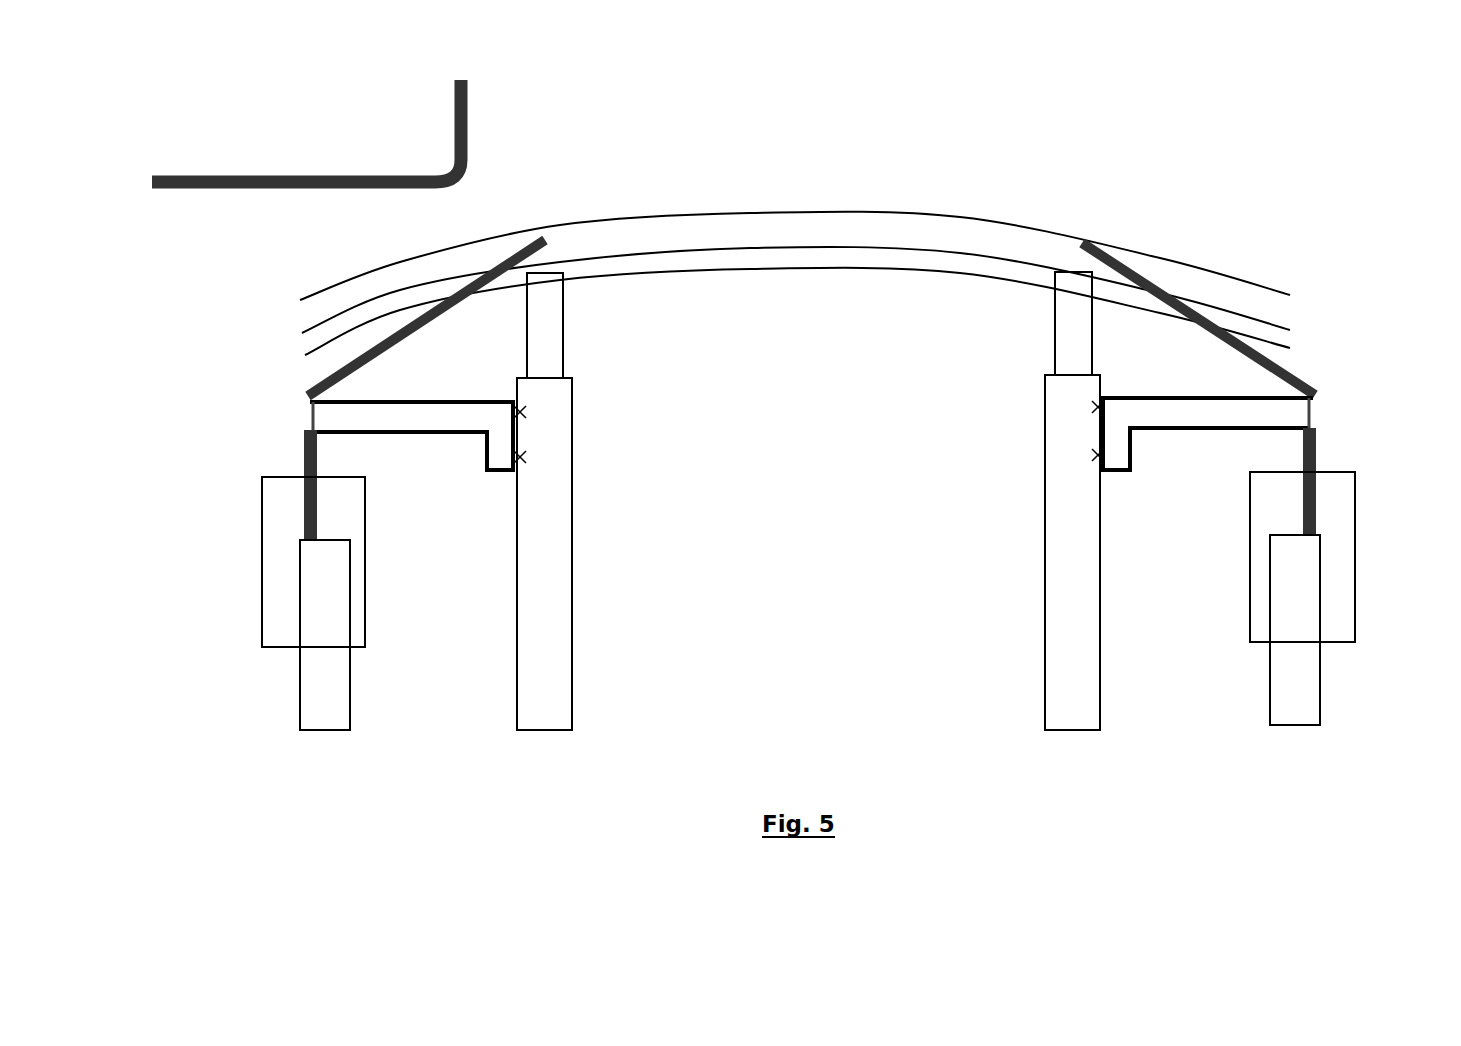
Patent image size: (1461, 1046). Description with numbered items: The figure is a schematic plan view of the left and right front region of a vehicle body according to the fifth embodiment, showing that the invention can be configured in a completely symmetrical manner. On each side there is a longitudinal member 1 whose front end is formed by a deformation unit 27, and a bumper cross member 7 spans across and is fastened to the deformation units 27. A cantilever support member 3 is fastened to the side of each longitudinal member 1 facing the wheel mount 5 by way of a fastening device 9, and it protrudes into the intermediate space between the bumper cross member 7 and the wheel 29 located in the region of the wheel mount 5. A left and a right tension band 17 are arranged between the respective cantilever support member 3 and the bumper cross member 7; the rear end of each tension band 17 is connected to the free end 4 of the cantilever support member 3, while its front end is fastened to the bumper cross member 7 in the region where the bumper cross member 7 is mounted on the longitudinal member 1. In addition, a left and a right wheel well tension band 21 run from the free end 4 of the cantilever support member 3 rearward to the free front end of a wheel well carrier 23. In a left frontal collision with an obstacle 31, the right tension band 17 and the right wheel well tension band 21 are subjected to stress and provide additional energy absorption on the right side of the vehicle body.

The longitudinal member 1 is at (553, 445).
The cantilever support member 3 is at (462, 416).
The free end 4 is at (312, 418).
The wheel mount 5 is at (224, 568).
The bumper cross member 7 is at (771, 228).
The fastening device 9 is at (495, 475).
The tension band 17 is at (348, 373).
The wheel well tension band 21 is at (303, 460).
The wheel well carrier 23 is at (318, 680).
The deformation unit 27 is at (548, 340).
The wheel 29 is at (268, 512).
The obstacle 31 is at (356, 172).